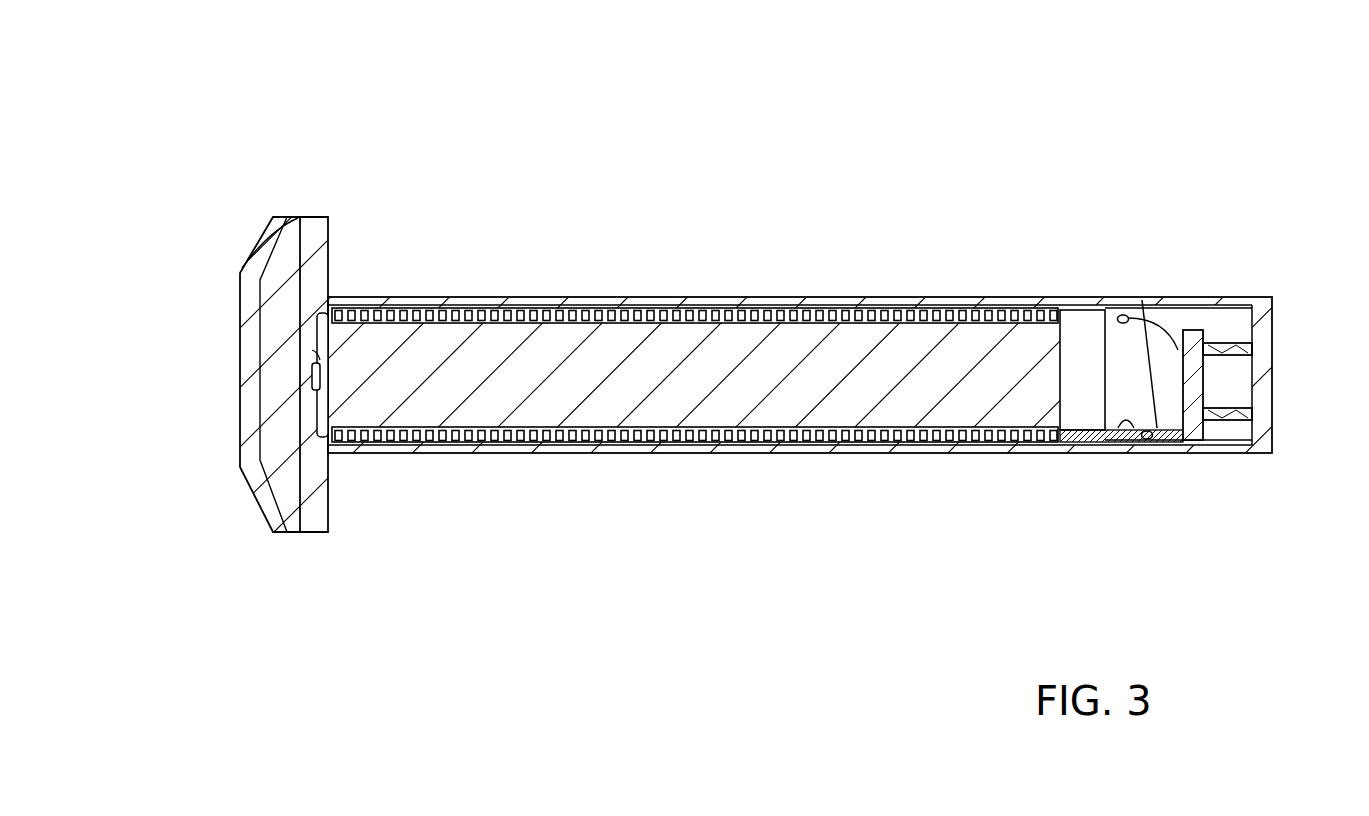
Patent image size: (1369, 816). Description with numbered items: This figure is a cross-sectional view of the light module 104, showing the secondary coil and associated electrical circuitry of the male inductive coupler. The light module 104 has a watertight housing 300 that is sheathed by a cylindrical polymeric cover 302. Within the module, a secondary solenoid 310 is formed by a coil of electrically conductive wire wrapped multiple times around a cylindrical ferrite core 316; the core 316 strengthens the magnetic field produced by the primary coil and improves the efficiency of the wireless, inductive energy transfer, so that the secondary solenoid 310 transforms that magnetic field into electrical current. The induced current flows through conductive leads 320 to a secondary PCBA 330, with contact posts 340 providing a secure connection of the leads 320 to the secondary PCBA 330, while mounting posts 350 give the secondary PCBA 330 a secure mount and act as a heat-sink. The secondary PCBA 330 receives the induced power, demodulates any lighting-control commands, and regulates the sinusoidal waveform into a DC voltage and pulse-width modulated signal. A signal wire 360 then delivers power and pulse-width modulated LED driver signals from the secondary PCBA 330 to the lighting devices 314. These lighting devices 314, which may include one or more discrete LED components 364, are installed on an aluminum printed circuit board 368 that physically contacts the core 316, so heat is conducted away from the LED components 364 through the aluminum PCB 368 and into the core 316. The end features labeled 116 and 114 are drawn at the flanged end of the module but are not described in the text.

The light module 104 is at (772, 286).
The housing 300 is at (324, 350).
The flange plate 116 is at (300, 214).
The finger flange 114 is at (268, 516).
The aluminum printed circuit board 368 is at (312, 350).
The discrete LED components 364 is at (283, 377).
The lighting devices 314 is at (316, 392).
The secondary solenoid 310 is at (440, 427).
The cylindrical polymeric cover 302 is at (515, 296).
The cylindrical ferrite core 316 is at (636, 335).
The conductive leads 320 is at (1104, 318).
The contact posts 340 is at (1142, 300).
The mounting posts 350 is at (1240, 410).
The signal wire 360 is at (1127, 430).
The secondary PCBA 330 is at (1183, 387).